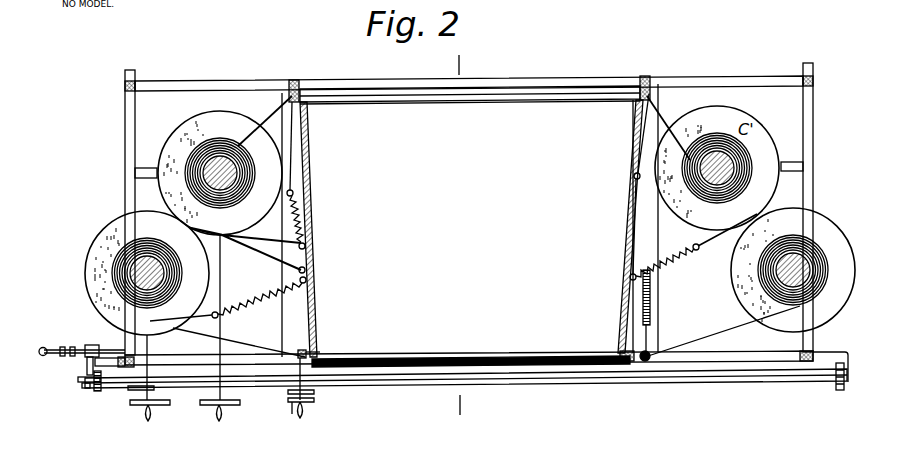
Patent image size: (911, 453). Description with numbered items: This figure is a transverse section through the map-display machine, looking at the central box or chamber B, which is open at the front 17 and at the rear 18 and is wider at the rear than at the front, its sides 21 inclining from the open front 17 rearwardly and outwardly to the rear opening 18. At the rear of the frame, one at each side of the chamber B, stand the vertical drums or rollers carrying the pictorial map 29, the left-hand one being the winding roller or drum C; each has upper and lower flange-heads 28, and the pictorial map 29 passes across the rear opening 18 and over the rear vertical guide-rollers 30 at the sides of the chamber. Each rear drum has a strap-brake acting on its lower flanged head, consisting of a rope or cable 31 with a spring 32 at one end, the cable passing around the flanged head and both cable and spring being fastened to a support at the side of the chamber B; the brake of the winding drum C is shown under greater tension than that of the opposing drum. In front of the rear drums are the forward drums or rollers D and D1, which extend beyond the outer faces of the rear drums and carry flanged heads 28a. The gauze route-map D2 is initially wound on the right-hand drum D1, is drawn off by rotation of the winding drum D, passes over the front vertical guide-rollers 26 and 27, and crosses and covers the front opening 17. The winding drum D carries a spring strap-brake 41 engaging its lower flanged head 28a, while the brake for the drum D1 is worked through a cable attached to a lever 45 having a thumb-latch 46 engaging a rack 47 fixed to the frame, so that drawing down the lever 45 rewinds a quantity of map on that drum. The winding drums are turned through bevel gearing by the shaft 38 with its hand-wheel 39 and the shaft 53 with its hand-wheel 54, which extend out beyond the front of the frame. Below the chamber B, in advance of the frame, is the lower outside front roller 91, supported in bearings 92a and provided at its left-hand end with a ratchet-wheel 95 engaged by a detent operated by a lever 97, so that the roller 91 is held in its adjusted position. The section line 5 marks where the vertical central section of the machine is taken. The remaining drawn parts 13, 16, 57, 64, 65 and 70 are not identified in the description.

The section line 5 is at (465, 233).
The upright frame post 13 is at (124, 142).
The frame cross bar 16 is at (548, 80).
The front opening 17 is at (523, 357).
The rear opening 18 is at (485, 101).
The sides of chamber 21 is at (312, 210).
The front vertical guide-roller 26 is at (648, 362).
The front vertical guide-roller 27 is at (321, 353).
The flange-head 28 is at (183, 130).
The flanged head 28a is at (758, 296).
The pictorial map 29 is at (400, 89).
The rear vertical guide-roller 30 is at (292, 80).
The rope or cable 31 is at (294, 158).
The spring 32 is at (298, 200).
The shaft 38 is at (224, 309).
The hand-wheel 39 is at (224, 417).
The spring strap-brake 41 is at (262, 254).
The lever 45 is at (46, 348).
The thumb-latch 46 is at (89, 346).
The rack 47 is at (114, 366).
The shaft 53 is at (138, 391).
The hand-wheel 54 is at (150, 417).
The rack rod 57 is at (664, 311).
The block 64 is at (307, 340).
The plate 65 is at (316, 398).
The foot 70 is at (312, 402).
The lower outside front roller 91 is at (572, 386).
The bearings 92a is at (78, 379).
The ratchet-wheel 95 is at (97, 392).
The lever 97 is at (85, 388).
The central box or chamber B is at (471, 221).
The winding roller or drum C is at (232, 131).
The winding drum or roller D is at (98, 189).
The right-hand forward drum or roller D1 is at (831, 208).
The gauze map D2 is at (262, 346).